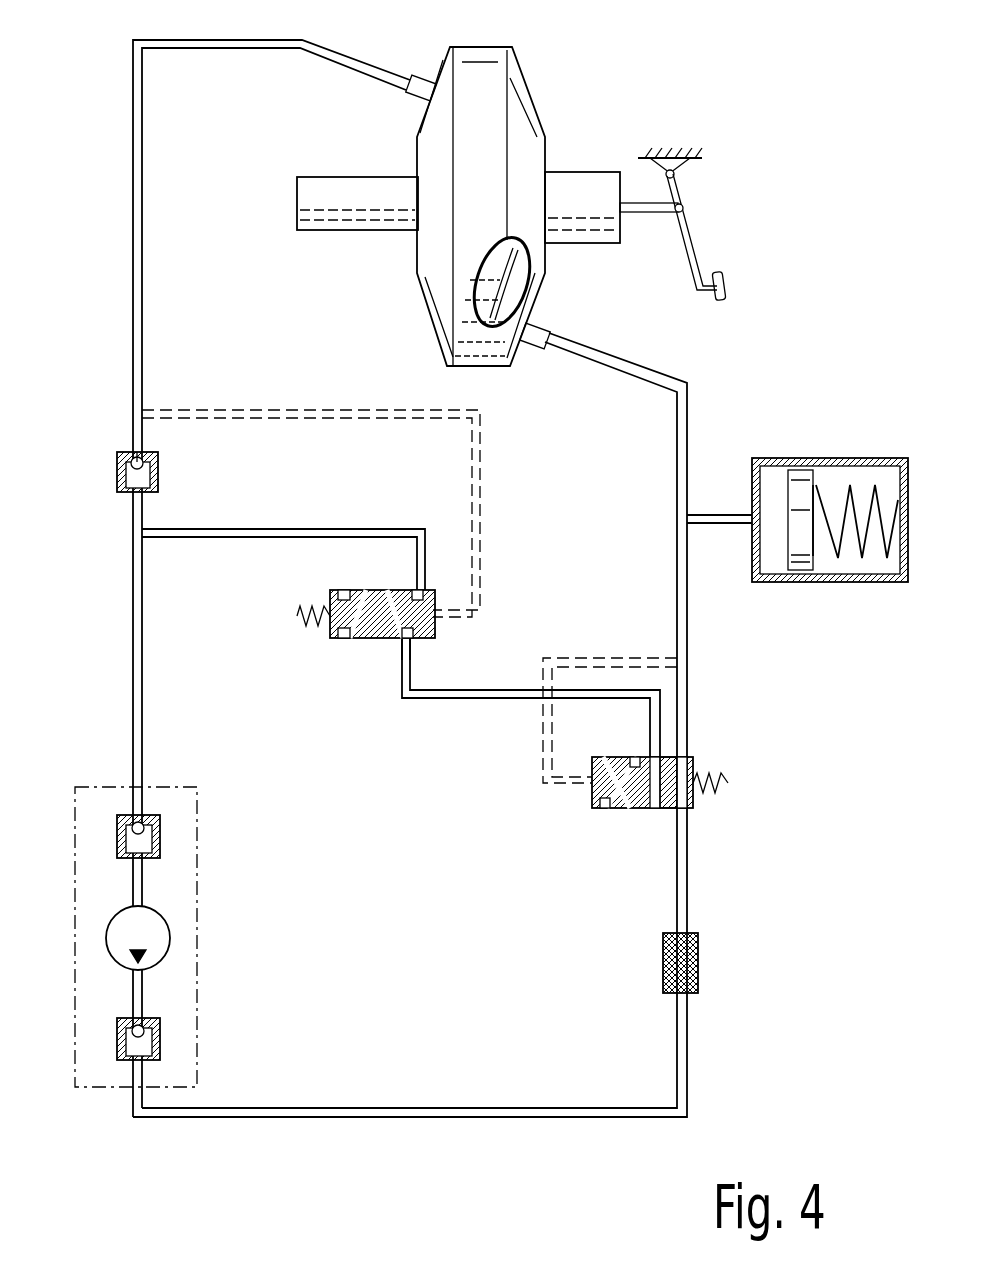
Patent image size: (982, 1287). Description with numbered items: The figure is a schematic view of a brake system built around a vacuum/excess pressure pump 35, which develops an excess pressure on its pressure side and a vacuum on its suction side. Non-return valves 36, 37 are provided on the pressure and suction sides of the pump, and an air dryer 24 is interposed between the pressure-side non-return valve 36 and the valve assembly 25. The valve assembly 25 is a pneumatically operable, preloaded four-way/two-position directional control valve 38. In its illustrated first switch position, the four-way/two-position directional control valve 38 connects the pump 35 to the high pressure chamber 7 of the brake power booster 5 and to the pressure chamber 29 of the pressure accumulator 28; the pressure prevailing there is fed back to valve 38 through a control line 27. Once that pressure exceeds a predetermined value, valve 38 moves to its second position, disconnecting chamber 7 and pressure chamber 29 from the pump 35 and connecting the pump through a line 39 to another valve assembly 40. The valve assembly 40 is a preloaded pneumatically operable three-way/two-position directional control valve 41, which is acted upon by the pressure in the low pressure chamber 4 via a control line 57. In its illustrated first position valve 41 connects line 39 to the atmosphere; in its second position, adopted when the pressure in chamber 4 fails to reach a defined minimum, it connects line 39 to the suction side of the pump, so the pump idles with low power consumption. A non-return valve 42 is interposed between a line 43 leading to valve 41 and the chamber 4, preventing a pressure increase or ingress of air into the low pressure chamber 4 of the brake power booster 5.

The low pressure chamber 4 is at (487, 290).
The brake power booster 5 is at (535, 67).
The high pressure chamber 7 is at (520, 290).
The air dryer 24 is at (699, 965).
The valve assembly 25 is at (597, 820).
The control line 27 is at (603, 656).
The pressure accumulator 28 is at (846, 455).
The pressure chamber 29 is at (777, 484).
The vacuum/excess pressure pump 35 is at (171, 938).
The non-return valve 36 is at (161, 1032).
The non-return valve 37 is at (161, 836).
The four-way/two-position directional control valve 38 is at (665, 810).
The line 39 is at (480, 700).
The valve assembly 40 is at (337, 650).
The three-way/two-position directional control valve 41 is at (388, 641).
The non-return valve 42 is at (116, 475).
The line 43 is at (296, 529).
The control line 57 is at (293, 409).